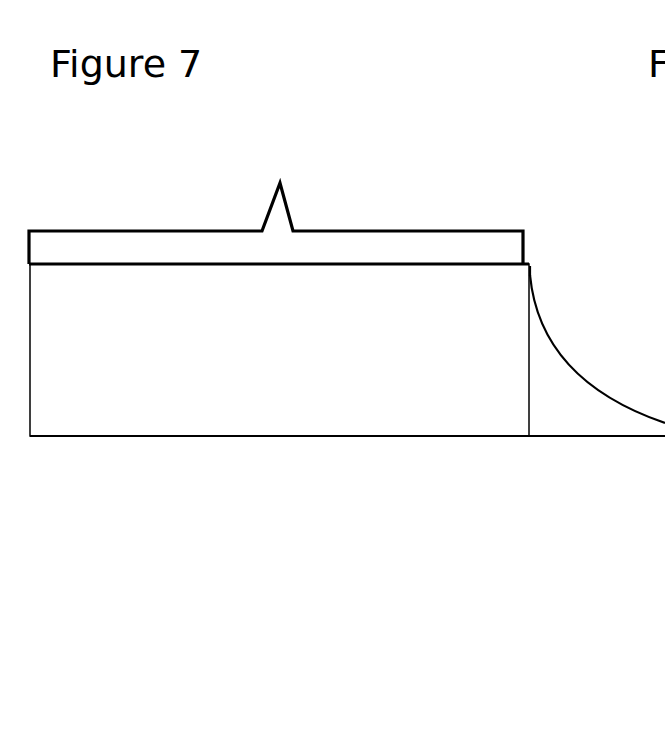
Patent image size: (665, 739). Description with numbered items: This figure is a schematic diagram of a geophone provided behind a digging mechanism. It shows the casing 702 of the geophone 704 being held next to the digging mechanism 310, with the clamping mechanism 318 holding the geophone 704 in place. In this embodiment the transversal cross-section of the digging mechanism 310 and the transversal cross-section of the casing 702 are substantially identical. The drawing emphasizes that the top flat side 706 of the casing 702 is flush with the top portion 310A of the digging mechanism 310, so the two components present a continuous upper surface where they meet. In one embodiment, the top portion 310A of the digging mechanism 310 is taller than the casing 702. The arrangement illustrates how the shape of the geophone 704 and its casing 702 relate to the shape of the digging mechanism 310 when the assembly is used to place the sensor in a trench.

The geophone 704 is at (253, 361).
The casing 702 is at (302, 418).
The clamping mechanism 318 is at (353, 231).
The top flat side 706 is at (452, 262).
The digging mechanism 310 is at (565, 373).
The top portion 310A is at (531, 278).